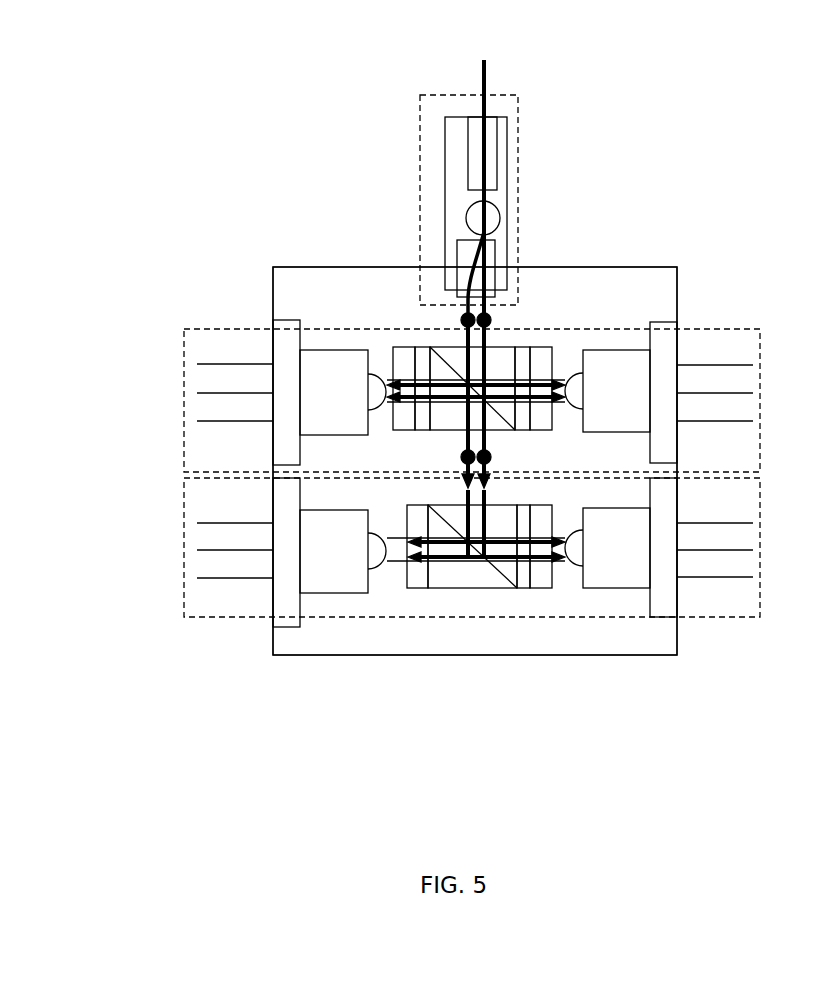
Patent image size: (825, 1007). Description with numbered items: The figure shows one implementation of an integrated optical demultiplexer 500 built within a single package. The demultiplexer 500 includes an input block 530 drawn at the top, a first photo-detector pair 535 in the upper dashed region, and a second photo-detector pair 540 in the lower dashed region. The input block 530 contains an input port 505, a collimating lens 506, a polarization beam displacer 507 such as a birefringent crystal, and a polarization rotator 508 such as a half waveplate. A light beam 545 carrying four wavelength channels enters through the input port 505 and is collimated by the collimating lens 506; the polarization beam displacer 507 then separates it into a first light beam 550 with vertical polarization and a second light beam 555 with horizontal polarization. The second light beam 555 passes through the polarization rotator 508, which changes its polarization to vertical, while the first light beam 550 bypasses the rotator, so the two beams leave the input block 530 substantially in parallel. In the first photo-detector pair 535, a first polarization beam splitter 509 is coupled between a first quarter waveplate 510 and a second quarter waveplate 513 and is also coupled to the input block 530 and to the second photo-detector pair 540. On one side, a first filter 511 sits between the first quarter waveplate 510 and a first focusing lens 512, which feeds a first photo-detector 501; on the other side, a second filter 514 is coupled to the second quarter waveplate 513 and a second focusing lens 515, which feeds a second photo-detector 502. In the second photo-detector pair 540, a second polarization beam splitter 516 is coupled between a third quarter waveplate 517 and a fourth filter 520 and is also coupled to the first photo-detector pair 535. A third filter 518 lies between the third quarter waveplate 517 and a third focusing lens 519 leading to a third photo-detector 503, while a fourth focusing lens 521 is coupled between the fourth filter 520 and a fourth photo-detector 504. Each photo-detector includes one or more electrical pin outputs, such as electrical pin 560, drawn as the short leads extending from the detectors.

The integrated optical demultiplexer 500 is at (267, 100).
The first photo-detector 501 is at (691, 456).
The second photo-detector 502 is at (274, 310).
The third photo-detector 503 is at (687, 622).
The fourth photo-detector 504 is at (278, 638).
The input port 505 is at (506, 110).
The collimating lens 506 is at (459, 195).
The polarization beam displacer 507 is at (446, 250).
The polarization rotator 508 is at (493, 249).
The first polarization beam splitter 509 is at (506, 333).
The first quarter waveplate 510 is at (535, 331).
The first filter 511 is at (564, 344).
The first focusing lens 512 is at (595, 370).
The second quarter waveplate 513 is at (408, 331).
The second filter 514 is at (382, 341).
The second focusing lens 515 is at (359, 370).
The second polarization beam splitter 516 is at (495, 598).
The third quarter waveplate 517 is at (526, 597).
The third filter 518 is at (540, 595).
The third focusing lens 519 is at (595, 561).
The fourth filter 520 is at (408, 597).
The fourth focusing lens 521 is at (360, 565).
The input block 530 is at (450, 80).
The first photo-detector pair 535 is at (169, 366).
The second photo-detector pair 540 is at (169, 529).
The light beam 545 is at (495, 181).
The first light beam 550 is at (451, 274).
The second light beam 555 is at (503, 272).
The electrical pin 560 is at (197, 416).